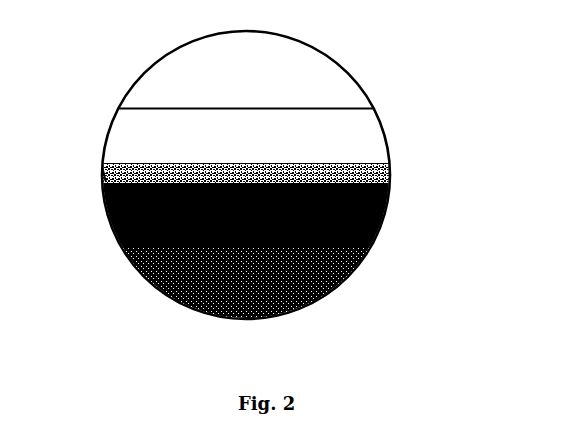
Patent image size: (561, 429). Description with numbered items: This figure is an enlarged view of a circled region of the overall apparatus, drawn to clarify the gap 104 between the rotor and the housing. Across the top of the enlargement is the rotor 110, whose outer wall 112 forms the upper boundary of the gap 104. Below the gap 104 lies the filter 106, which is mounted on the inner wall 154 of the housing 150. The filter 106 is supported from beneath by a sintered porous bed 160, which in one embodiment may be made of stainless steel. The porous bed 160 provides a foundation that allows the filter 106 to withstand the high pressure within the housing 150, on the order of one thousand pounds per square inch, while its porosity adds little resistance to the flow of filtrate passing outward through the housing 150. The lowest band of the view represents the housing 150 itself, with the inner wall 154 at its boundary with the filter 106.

The rotor 110 is at (283, 82).
The outer wall 112 is at (143, 108).
The gap 104 is at (296, 134).
The filter 106 is at (330, 163).
The inner wall 154 is at (102, 172).
The sintered porous bed 160 is at (401, 212).
The housing 150 is at (350, 275).